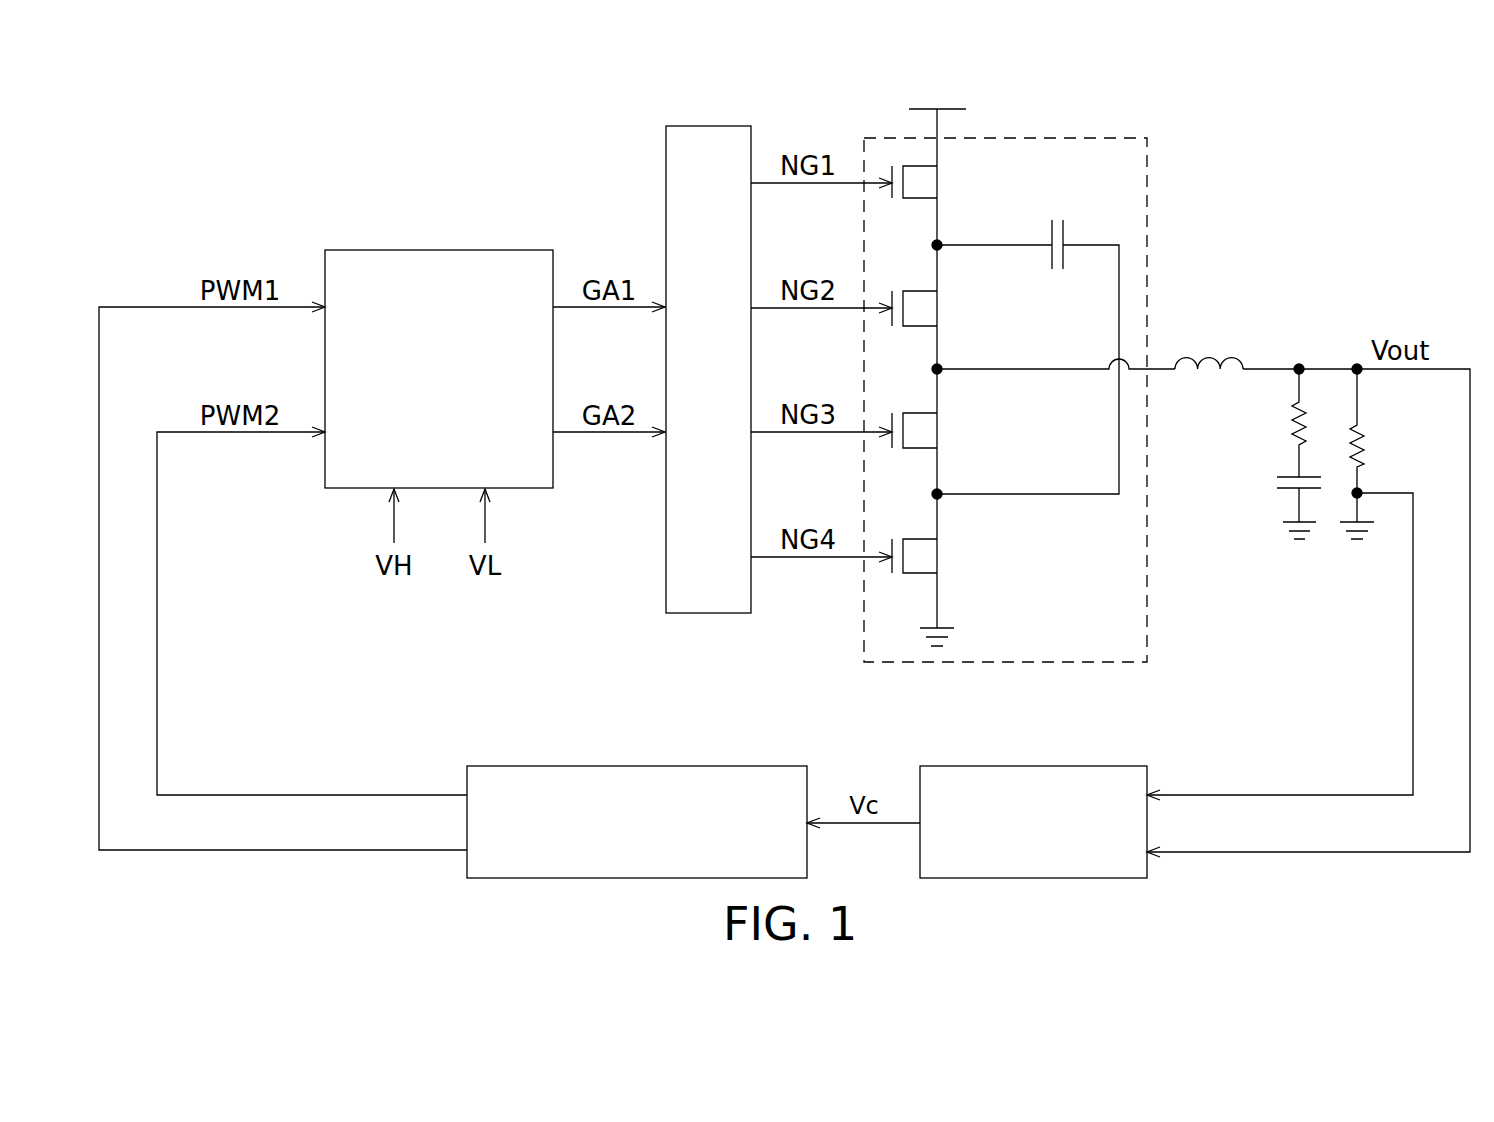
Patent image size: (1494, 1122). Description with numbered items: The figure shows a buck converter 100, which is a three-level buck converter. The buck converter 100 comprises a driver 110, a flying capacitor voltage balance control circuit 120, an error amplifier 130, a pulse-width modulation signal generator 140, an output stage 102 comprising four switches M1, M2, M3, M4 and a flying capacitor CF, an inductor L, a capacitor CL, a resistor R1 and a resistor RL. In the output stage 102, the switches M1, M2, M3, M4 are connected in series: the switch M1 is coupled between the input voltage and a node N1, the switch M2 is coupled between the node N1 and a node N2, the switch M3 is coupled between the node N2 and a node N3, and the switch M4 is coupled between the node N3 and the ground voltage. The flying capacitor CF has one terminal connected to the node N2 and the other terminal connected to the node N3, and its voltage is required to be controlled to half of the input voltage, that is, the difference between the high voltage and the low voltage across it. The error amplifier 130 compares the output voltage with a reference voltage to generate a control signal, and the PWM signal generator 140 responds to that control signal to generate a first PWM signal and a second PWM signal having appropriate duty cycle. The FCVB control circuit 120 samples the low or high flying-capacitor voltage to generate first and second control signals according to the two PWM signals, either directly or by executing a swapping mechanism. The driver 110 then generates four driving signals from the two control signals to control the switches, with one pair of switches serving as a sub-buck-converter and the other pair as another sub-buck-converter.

The buck converter 100 is at (1318, 150).
The output stage 102 is at (1070, 137).
The driver 110 is at (705, 125).
The flying capacitor voltage balance (FCVB) control circuit 120 is at (437, 249).
The error amplifier 130 is at (1030, 765).
The pulse-width modulation (PWM) signal generator 140 is at (634, 765).
The switch M1 is at (934, 182).
The switch M2 is at (934, 308).
The switch M3 is at (934, 430).
The switch M4 is at (934, 556).
The node N1 is at (919, 244).
The node N2 is at (918, 368).
The node N3 is at (918, 493).
The flying capacitor CF is at (1028, 341).
The inductor L is at (1209, 347).
The resistor R1 is at (1279, 423).
The capacitor CL is at (1280, 503).
The resistor RL is at (1370, 454).